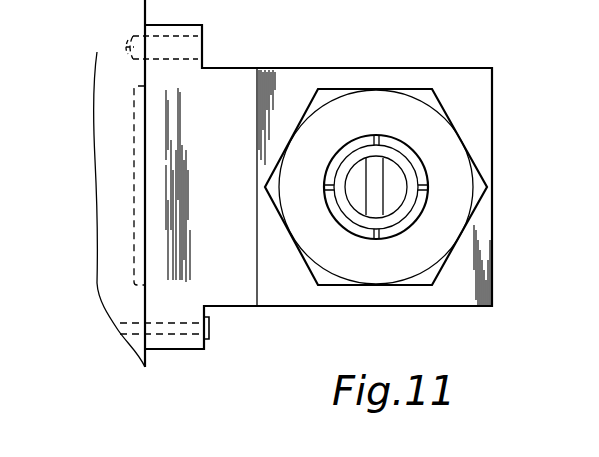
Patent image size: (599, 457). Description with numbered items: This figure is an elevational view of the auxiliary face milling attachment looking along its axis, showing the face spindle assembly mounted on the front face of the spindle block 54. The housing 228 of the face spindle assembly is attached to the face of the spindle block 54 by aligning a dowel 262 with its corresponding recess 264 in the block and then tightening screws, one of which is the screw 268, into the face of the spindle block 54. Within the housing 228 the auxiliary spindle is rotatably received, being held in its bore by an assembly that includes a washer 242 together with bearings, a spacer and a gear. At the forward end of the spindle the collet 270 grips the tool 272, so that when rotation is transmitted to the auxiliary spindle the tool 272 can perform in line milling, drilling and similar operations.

The spindle block 54 is at (110, 232).
The washer 242 is at (123, 0).
The housing 228 is at (232, 74).
The dowel 262 is at (182, 40).
The recess 264 is at (126, 47).
The screw 268 is at (210, 328).
The collet 270 is at (463, 145).
The tool 272 is at (365, 192).